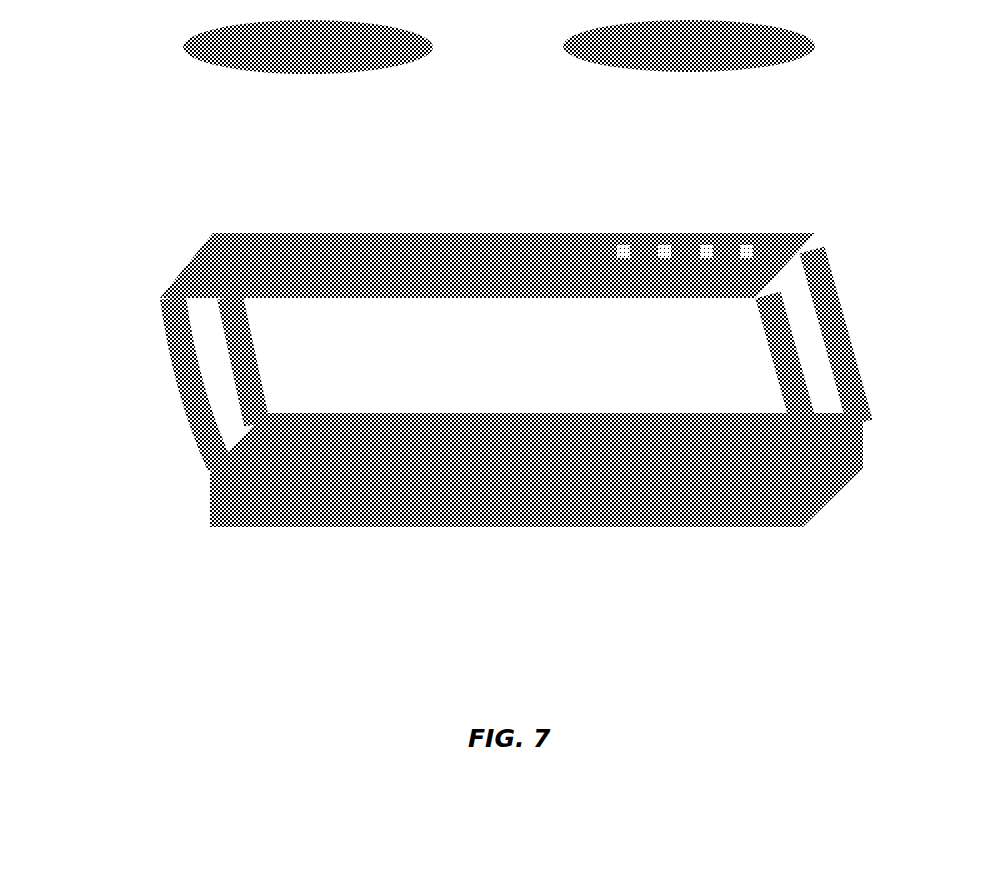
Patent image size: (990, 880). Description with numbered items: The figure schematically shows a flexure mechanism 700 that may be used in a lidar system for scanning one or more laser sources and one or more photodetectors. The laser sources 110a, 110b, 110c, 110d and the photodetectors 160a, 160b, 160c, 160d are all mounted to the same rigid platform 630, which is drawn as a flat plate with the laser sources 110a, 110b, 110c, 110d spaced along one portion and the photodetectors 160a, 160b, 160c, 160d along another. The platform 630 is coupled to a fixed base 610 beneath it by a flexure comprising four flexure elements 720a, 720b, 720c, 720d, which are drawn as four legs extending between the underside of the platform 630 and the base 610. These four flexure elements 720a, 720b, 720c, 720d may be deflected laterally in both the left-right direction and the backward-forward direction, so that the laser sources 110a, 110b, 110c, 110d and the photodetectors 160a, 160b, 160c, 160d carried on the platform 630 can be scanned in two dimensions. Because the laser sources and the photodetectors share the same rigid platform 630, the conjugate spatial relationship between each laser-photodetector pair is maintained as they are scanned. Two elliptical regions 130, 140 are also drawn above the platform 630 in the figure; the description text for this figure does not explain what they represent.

The first light source 130 is at (225, 56).
The second light source 140 is at (776, 55).
The laser source 110a is at (257, 255).
The laser source 110b is at (300, 255).
The laser source 110c is at (343, 257).
The laser source 110d is at (385, 250).
The rigid platform 630 is at (510, 245).
The photodetector 160a is at (630, 250).
The photodetector 160b is at (672, 250).
The photodetector 160c is at (715, 250).
The photodetector 160d is at (755, 250).
The flexure mechanism 700 is at (108, 318).
The flexure element 720a is at (197, 397).
The flexure element 720b is at (243, 387).
The flexure element 720c is at (793, 368).
The flexure element 720d is at (840, 347).
The fixed base 610 is at (650, 502).